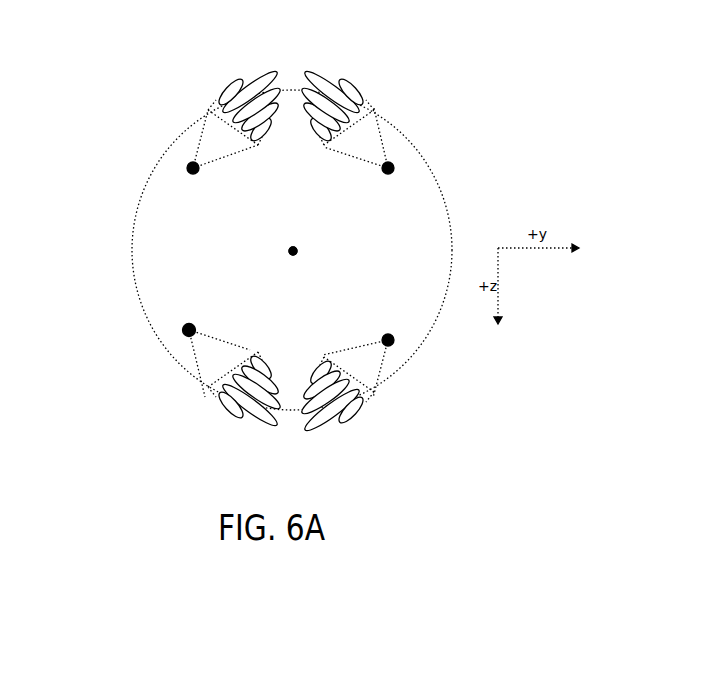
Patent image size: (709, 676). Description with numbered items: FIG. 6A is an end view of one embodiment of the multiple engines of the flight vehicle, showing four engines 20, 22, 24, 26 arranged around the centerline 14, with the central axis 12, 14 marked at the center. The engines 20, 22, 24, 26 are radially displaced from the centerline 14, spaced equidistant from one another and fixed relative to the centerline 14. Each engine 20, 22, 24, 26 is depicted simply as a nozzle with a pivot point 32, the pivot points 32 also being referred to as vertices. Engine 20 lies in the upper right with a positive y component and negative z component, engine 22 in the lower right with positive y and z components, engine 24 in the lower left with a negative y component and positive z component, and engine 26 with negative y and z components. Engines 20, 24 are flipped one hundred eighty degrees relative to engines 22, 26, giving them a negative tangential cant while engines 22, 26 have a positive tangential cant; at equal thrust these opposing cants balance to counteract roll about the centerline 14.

The rotation axis 12 is at (295, 248).
The centerline 14 is at (293, 251).
The engine 20 is at (377, 142).
The engine 22 is at (377, 372).
The engine 24 is at (205, 353).
The engine 26 is at (215, 150).
The pivot point 32 is at (187, 168).